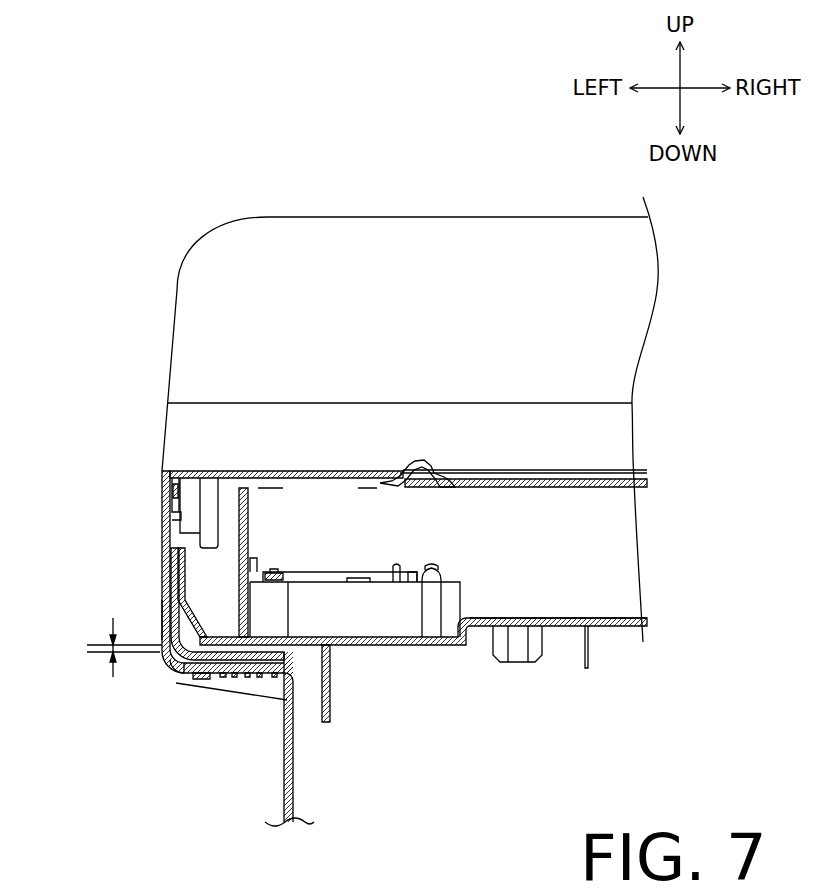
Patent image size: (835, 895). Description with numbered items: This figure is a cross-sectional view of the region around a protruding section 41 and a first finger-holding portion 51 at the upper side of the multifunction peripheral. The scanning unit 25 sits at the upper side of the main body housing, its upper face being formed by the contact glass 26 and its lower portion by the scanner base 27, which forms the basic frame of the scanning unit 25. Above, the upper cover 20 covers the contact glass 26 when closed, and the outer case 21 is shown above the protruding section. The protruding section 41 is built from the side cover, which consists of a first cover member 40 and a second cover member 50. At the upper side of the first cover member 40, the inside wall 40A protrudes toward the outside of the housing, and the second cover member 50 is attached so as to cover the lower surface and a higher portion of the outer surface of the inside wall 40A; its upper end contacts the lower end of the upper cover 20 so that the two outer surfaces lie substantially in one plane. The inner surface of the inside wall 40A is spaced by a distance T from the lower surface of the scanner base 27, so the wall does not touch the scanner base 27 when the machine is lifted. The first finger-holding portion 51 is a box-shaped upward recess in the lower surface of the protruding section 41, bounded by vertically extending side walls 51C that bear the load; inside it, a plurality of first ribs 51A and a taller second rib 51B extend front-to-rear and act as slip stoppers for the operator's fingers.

The upper cover 20 is at (182, 437).
The case 21 is at (406, 231).
The scanning unit 25 is at (600, 548).
The contact glass 26 is at (612, 487).
The scanner base 27 is at (622, 627).
The first cover member 40 is at (294, 786).
The inside wall 40A is at (258, 656).
The protruding section 41 is at (149, 583).
The second cover member 50 is at (165, 520).
The first finger-holding portion 51 is at (228, 678).
The first rib 51A is at (248, 678).
The second rib 51B is at (209, 681).
The side wall 51C is at (192, 681).
The distance T is at (88, 650).